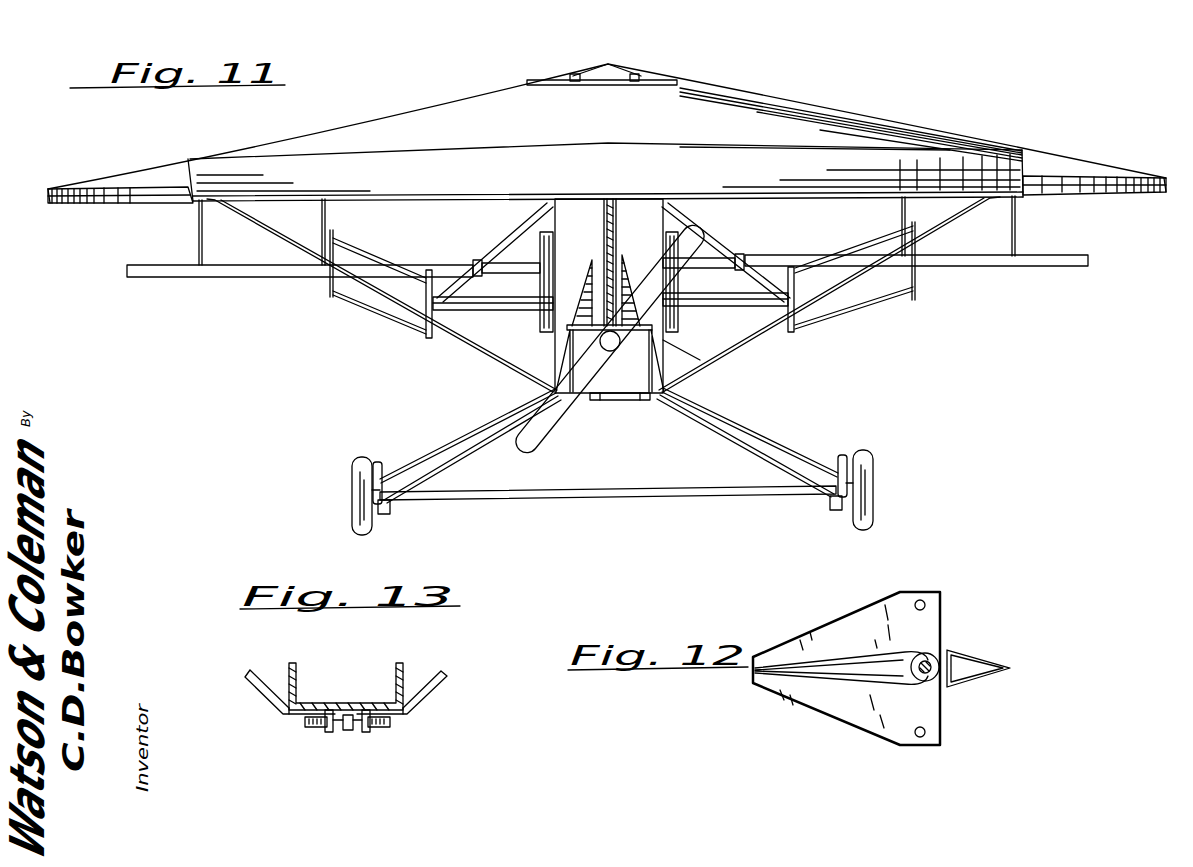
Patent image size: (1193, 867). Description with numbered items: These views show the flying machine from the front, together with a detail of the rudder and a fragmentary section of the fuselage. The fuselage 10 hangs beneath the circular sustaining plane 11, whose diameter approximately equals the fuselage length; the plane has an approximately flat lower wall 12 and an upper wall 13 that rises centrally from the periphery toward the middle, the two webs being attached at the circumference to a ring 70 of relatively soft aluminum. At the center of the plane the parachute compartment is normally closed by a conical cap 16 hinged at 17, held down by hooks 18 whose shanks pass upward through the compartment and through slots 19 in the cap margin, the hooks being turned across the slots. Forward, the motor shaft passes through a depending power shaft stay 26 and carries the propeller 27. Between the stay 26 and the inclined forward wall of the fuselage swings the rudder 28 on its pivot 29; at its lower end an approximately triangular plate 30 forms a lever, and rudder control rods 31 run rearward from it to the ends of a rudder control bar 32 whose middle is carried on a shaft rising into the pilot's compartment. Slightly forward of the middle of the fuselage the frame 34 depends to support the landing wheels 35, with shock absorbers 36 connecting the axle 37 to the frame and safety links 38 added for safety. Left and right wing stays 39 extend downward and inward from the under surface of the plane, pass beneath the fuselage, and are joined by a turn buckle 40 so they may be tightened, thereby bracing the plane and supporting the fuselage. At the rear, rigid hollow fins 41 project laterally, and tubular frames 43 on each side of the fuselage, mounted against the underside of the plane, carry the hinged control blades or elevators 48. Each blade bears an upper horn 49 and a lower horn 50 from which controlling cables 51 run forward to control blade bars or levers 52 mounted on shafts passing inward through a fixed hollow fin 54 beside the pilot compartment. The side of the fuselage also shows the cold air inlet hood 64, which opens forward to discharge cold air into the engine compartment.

In FIG. 11, the fuselage 10 is at (634, 215).
In FIG. 13, the fuselage 10 is at (296, 667).
In FIG. 11, the sustaining plane 11 is at (782, 103).
In FIG. 11, the lower wall 12 is at (120, 203).
In FIG. 11, the upper wall 13 is at (458, 97).
In FIG. 11, the cap 16 is at (609, 64).
In FIG. 11, the hinge 17 is at (640, 131).
In FIG. 11, the hooks 18 is at (576, 73).
In FIG. 11, the slots 19 is at (571, 85).
In FIG. 11, the power shaft stay 26 is at (598, 285).
In FIG. 12, the power shaft stay 26 is at (995, 656).
In FIG. 11, the propeller 27 is at (547, 427).
In FIG. 12, the rudder 28 is at (853, 658).
In FIG. 12, the pivot 29 is at (930, 680).
In FIG. 11, the triangular plate 30 is at (700, 360).
In FIG. 12, the triangular plate 30 is at (825, 718).
In FIG. 11, the rudder control rods 31 is at (569, 354).
In FIG. 11, the rudder control bar 32 is at (623, 400).
In FIG. 11, the frame 34 is at (458, 443).
In FIG. 11, the landing wheels 35 is at (362, 458).
In FIG. 11, the shock absorbers 36 is at (389, 514).
In FIG. 11, the axle 37 is at (530, 497).
In FIG. 11, the safety links 38 is at (381, 466).
In FIG. 11, the wing stays 39 is at (482, 352).
In FIG. 13, the wing stays 39 is at (267, 698).
In FIG. 13, the turn buckle 40 is at (345, 732).
In FIG. 11, the rigid hollow fins 41 is at (500, 268).
In FIG. 11, the tubular frames 43 is at (199, 238).
In FIG. 11, the control blade or elevator 48 is at (220, 278).
In FIG. 11, the upper horn 49 is at (335, 240).
In FIG. 11, the lower horn 50 is at (328, 303).
In FIG. 11, the controlling cables 51 is at (360, 306).
In FIG. 11, the control blade bars or levers 52 is at (424, 270).
In FIG. 11, the fixed laterally projecting hollow fin 54 is at (498, 310).
In FIG. 11, the cold air inlet hood 64 is at (537, 230).
In FIG. 11, the ring 70 is at (48, 194).